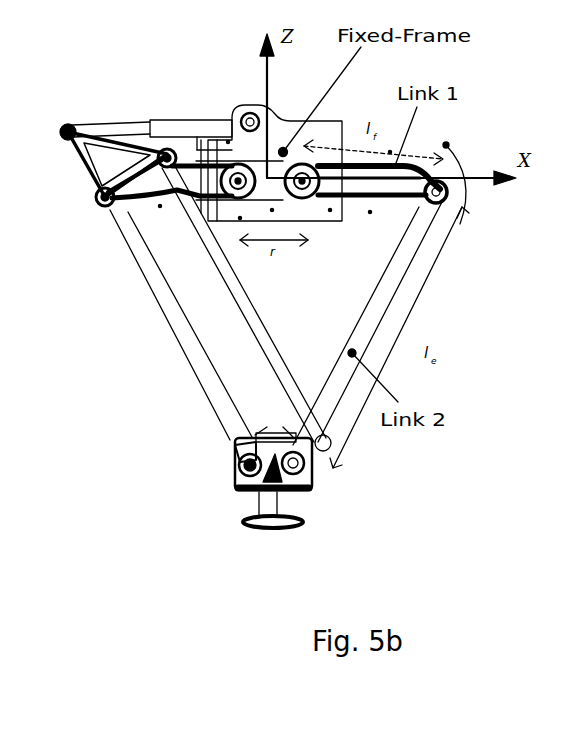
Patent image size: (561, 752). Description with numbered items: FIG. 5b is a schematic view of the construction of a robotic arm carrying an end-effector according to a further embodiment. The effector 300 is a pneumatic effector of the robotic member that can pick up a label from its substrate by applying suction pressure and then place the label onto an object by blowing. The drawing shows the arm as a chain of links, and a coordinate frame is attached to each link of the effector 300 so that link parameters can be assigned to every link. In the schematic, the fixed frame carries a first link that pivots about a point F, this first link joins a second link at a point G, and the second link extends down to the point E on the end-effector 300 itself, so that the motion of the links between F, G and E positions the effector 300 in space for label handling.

The pneumatic effector 300 is at (341, 475).
The end-effector joint E is at (235, 464).
The drive pulley joint F is at (228, 165).
The crank joint G is at (100, 213).